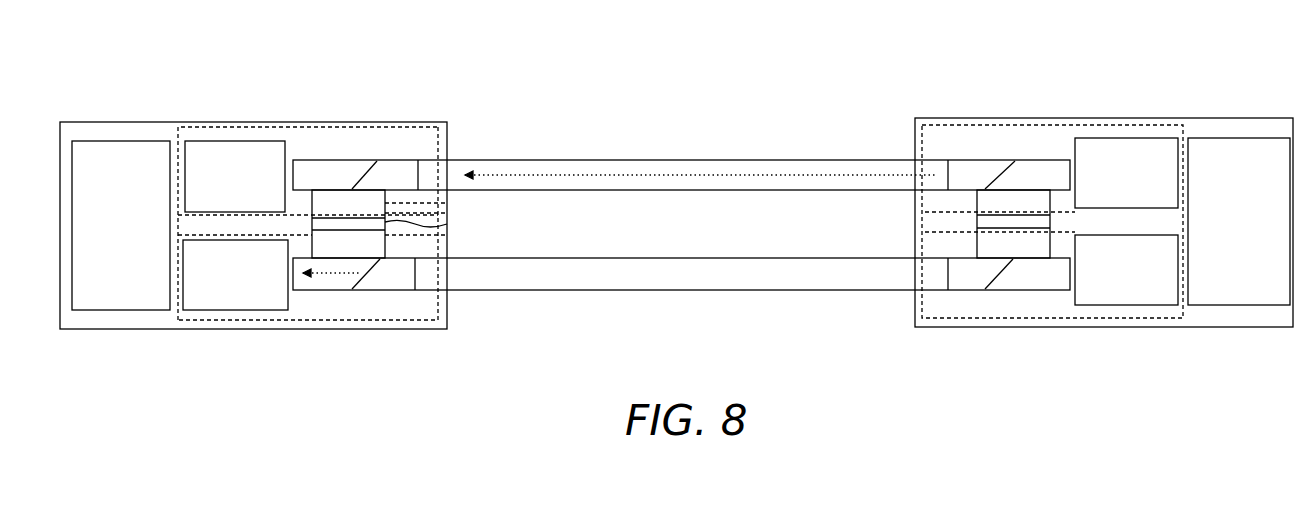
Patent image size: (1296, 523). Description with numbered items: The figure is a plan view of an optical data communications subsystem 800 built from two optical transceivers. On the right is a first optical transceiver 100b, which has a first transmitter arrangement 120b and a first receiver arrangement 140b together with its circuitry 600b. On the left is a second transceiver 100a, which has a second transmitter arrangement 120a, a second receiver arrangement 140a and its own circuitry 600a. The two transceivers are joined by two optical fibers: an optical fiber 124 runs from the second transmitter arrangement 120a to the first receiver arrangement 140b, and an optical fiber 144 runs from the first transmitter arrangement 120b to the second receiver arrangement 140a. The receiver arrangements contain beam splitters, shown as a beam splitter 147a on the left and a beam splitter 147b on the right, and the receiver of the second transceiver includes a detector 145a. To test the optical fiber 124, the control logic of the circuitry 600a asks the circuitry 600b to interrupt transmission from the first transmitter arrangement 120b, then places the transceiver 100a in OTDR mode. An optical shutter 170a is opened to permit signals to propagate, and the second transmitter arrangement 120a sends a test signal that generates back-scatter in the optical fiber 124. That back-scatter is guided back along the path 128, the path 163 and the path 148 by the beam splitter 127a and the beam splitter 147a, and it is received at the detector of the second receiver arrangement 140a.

The optical data communications subsystem 800 is at (568, 50).
The second transceiver 100a is at (139, 98).
The first optical transceiver 100b is at (1222, 100).
The circuitry 600a is at (120, 311).
The circuitry 600b is at (1240, 306).
The second transmitter arrangement 120a is at (385, 124).
The first transmitter arrangement 120b is at (975, 330).
The second receiver arrangement 140a is at (390, 333).
The first receiver arrangement 140b is at (980, 122).
The detector 145a is at (235, 275).
The beam splitter 127a is at (366, 176).
The beam splitter 147a is at (368, 292).
The beam splitter 147b is at (996, 166).
The path 148 is at (308, 296).
The path 163 is at (430, 203).
The optical shutter 170a is at (447, 224).
The optical fiber 124 is at (660, 161).
The path 128 is at (556, 166).
The optical fiber 144 is at (660, 292).